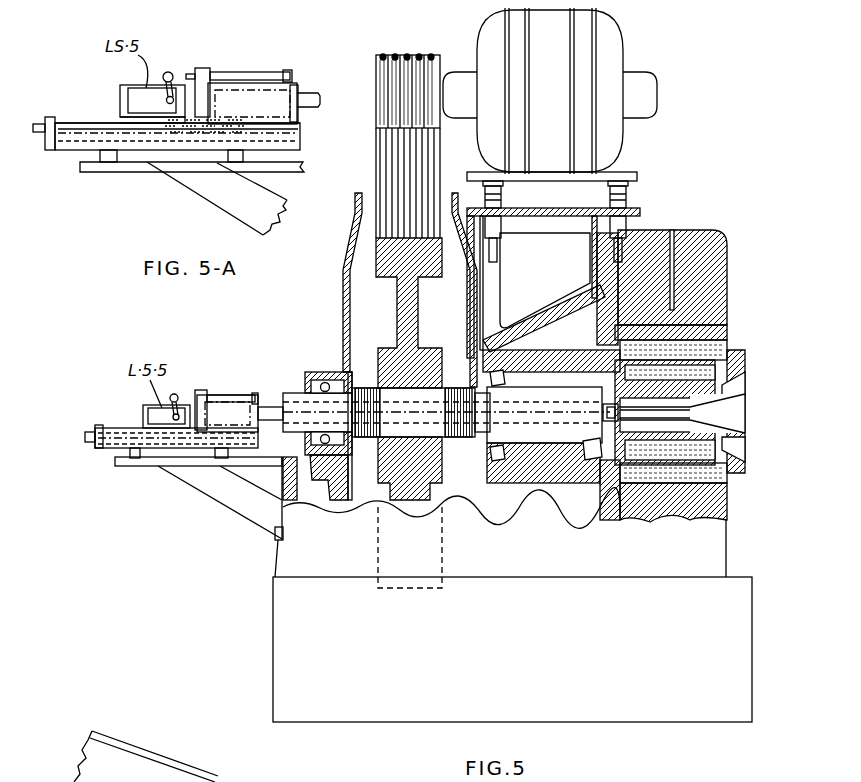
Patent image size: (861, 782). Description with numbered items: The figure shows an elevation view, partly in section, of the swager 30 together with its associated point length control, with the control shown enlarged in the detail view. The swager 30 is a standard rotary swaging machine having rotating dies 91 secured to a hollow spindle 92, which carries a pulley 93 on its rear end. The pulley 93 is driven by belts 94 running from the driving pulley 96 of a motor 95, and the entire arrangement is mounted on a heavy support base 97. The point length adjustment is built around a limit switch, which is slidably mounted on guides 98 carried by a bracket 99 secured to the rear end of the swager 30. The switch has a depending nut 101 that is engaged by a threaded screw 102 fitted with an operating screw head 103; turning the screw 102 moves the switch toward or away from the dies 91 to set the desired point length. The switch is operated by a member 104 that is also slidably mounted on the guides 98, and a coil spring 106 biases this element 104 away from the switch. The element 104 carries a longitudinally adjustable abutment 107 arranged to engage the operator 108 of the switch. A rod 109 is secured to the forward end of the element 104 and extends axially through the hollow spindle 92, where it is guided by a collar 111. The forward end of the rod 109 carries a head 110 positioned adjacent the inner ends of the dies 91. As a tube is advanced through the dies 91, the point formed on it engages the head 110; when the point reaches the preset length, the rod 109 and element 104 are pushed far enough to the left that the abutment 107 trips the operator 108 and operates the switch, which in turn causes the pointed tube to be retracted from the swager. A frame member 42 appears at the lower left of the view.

In FIG. 5, the swager 30 is at (655, 206).
In FIG. 5, the frame member 42 is at (181, 780).
In FIG. 5, the rotating dies 91 is at (712, 420).
In FIG. 5, the hollow spindle 92 is at (600, 458).
In FIG. 5, the pulley 93 is at (413, 492).
In FIG. 5, the belts 94 is at (432, 153).
In FIG. 5, the motor 95 is at (612, 45).
In FIG. 5, the driving pulley 96 is at (413, 72).
In FIG. 5, the support base 97 is at (728, 630).
In FIG. 5-A, the guides 98 is at (57, 182).
In FIG. 5-A, the bracket 99 is at (177, 173).
In FIG. 5-A, the depending nut 101 is at (135, 140).
In FIG. 5-A, the threaded screw 102 is at (68, 122).
In FIG. 5-A, the operating screw head 103 is at (40, 117).
In FIG. 5, the operating screw head 103 is at (88, 440).
In FIG. 5-A, the member 104 is at (296, 86).
In FIG. 5-A, the coil spring 106 is at (200, 128).
In FIG. 5-A, the longitudinally adjustable abutment 107 is at (250, 70).
In FIG. 5-A, the operator 108 is at (170, 72).
In FIG. 5, the operator 108 is at (180, 395).
In FIG. 5-A, the rod 109 is at (311, 95).
In FIG. 5, the head 110 is at (585, 420).
In FIG. 5, the collar 111 is at (600, 410).